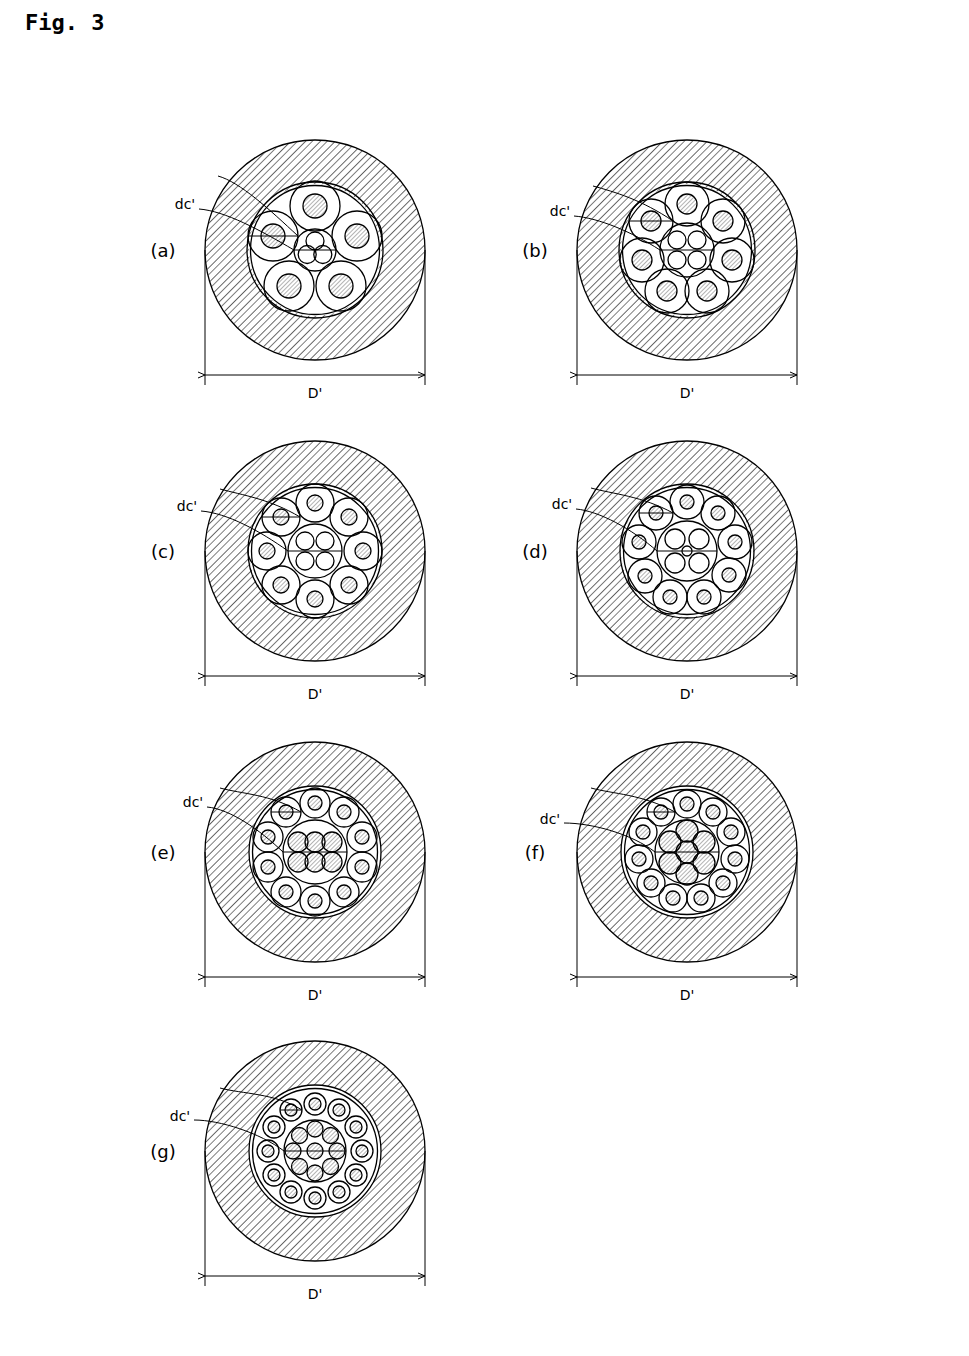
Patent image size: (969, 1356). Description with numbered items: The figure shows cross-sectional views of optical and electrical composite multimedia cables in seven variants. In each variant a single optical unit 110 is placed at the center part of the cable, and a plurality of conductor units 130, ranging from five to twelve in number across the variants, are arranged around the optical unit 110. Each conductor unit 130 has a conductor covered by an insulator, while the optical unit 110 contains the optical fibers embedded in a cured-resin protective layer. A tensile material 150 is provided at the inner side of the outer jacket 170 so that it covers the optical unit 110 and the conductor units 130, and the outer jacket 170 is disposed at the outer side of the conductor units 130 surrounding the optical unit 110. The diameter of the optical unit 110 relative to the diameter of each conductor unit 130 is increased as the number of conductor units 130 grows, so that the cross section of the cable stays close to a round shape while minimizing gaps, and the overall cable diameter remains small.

The optical unit 110 is at (501, 692).
The conductor unit 130 is at (553, 695).
The tensile material 150 is at (522, 685).
The outer jacket 170 is at (538, 700).